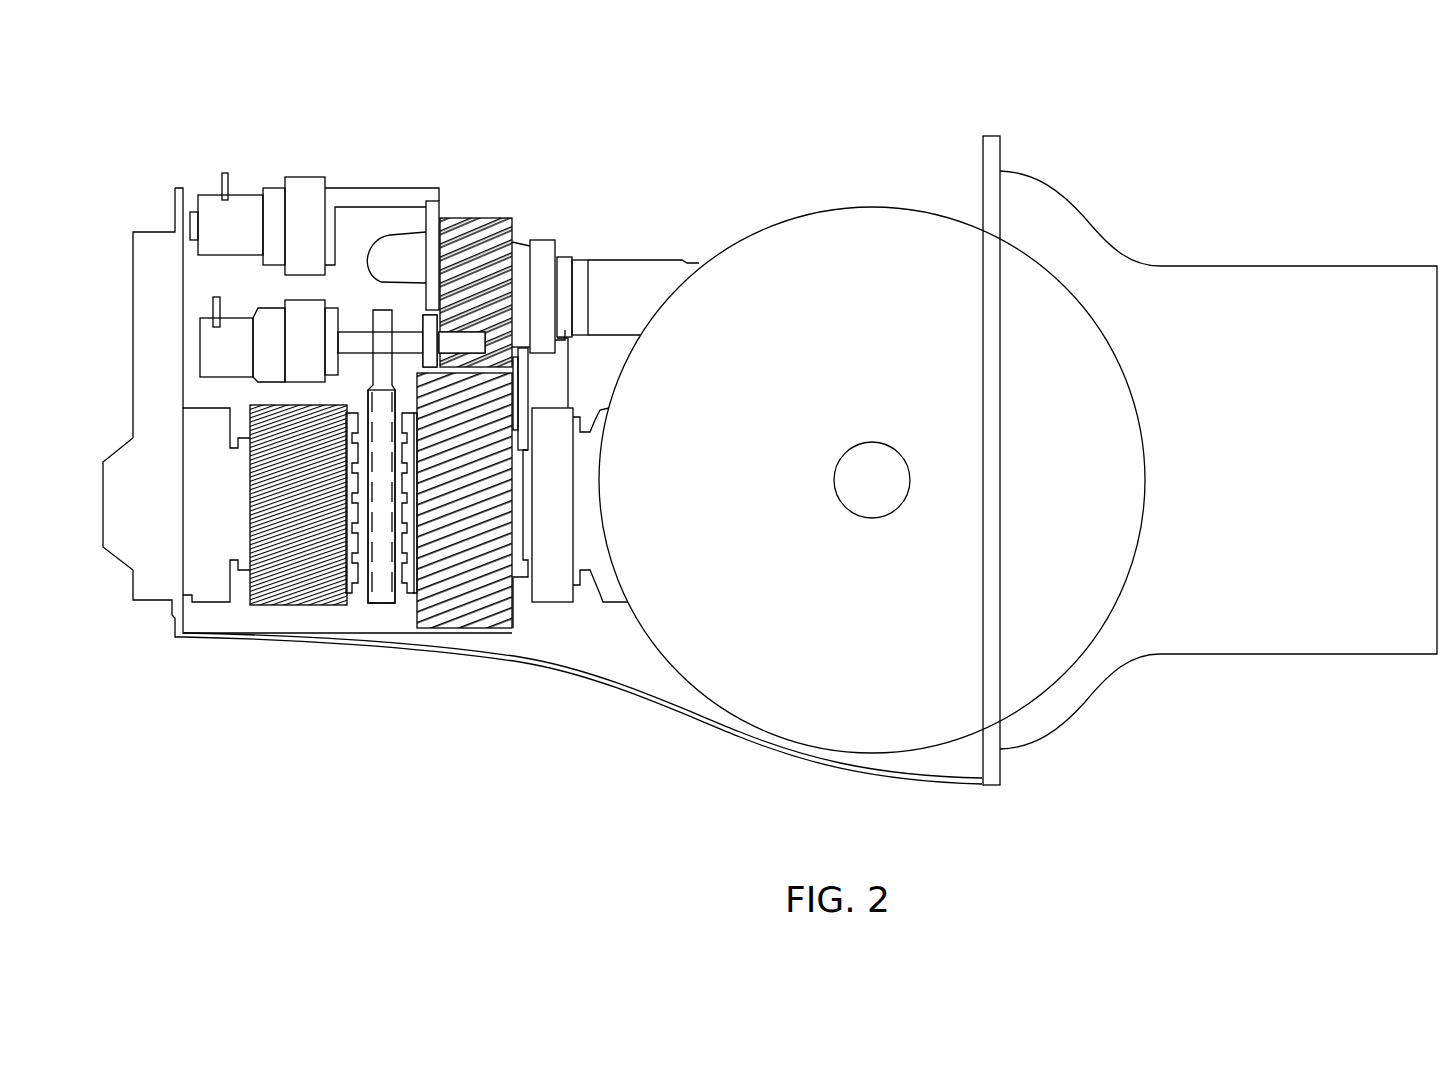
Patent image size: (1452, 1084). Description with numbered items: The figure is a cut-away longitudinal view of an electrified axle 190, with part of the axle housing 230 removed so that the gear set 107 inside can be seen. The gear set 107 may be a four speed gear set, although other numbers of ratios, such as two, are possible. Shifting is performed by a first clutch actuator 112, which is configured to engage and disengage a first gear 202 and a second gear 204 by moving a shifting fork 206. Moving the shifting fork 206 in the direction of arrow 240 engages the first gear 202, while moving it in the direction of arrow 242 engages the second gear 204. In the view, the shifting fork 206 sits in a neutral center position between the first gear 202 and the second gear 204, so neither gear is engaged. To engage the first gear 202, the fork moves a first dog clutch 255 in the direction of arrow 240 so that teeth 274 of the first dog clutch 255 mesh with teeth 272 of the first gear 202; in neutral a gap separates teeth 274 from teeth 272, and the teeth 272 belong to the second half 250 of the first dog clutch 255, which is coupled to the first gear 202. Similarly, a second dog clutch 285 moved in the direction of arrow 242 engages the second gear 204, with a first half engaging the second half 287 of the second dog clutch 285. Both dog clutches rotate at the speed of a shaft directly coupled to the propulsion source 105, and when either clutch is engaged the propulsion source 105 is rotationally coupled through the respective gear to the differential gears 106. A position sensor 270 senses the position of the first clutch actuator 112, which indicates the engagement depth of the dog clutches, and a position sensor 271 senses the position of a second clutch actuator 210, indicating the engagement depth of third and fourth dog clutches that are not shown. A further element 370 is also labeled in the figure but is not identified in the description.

The propulsion source 105 is at (1057, 191).
The differential gears 106 is at (672, 667).
The gear set 107 is at (231, 650).
The first clutch actuator 112 is at (214, 337).
The electrified axle 190 is at (373, 124).
The first gear 202 is at (257, 602).
The second gear 204 is at (513, 607).
The shifting fork 206 is at (378, 604).
The second clutch actuator 210 is at (234, 226).
The axle housing 230 is at (588, 672).
The arrow 240 is at (372, 312).
The arrow 242 is at (413, 306).
The second half of first dog clutch 250 is at (347, 607).
The first dog clutch 255 is at (373, 601).
The position sensor 270 is at (218, 298).
The position sensor 271 is at (225, 173).
The teeth of first gear 272 is at (360, 412).
The teeth of first dog clutch 274 is at (371, 400).
The second dog clutch 285 is at (397, 600).
The second half of second dog clutch 287 is at (415, 600).
The air gap 370 is at (360, 549).